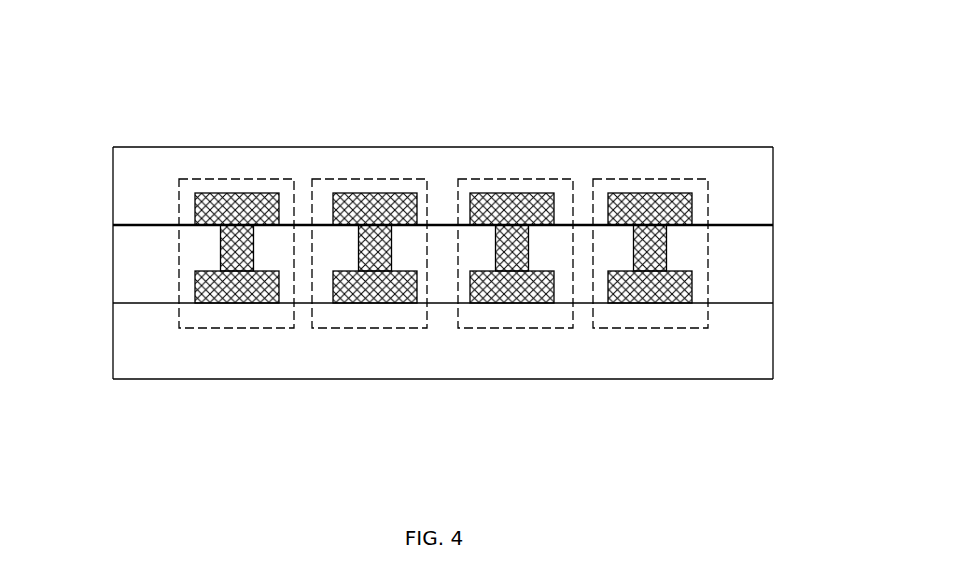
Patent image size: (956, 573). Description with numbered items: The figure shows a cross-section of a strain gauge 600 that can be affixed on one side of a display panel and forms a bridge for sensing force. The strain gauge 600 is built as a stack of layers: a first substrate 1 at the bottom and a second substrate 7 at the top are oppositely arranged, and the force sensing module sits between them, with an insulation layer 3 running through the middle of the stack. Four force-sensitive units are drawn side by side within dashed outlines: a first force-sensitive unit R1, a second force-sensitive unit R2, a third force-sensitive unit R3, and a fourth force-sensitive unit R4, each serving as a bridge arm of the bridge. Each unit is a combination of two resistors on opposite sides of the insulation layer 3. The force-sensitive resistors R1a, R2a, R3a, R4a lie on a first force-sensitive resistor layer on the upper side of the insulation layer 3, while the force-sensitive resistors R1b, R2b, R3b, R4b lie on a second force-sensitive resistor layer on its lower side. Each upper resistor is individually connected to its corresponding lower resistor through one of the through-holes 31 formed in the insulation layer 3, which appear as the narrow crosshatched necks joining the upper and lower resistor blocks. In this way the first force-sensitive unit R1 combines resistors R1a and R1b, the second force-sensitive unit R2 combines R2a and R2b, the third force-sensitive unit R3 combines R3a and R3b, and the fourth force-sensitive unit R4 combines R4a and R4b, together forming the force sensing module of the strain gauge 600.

The strain gauge 600 is at (150, 58).
The second substrate 7 is at (192, 168).
The insulation layer 3 is at (718, 272).
The first substrate 1 is at (720, 339).
The through-holes 31 is at (220, 248).
The first force-sensitive unit R1 is at (178, 328).
The second force-sensitive unit R2 is at (311, 328).
The third force-sensitive unit R3 is at (457, 328).
The fourth force-sensitive unit R4 is at (592, 328).
The force-sensitive resistor R1a is at (237, 207).
The force-sensitive resistor R2a is at (375, 207).
The force-sensitive resistor R3a is at (512, 207).
The force-sensitive resistor R4a is at (650, 207).
The force-sensitive resistor R1b is at (233, 288).
The force-sensitive resistor R2b is at (371, 288).
The force-sensitive resistor R3b is at (508, 288).
The force-sensitive resistor R4b is at (646, 288).